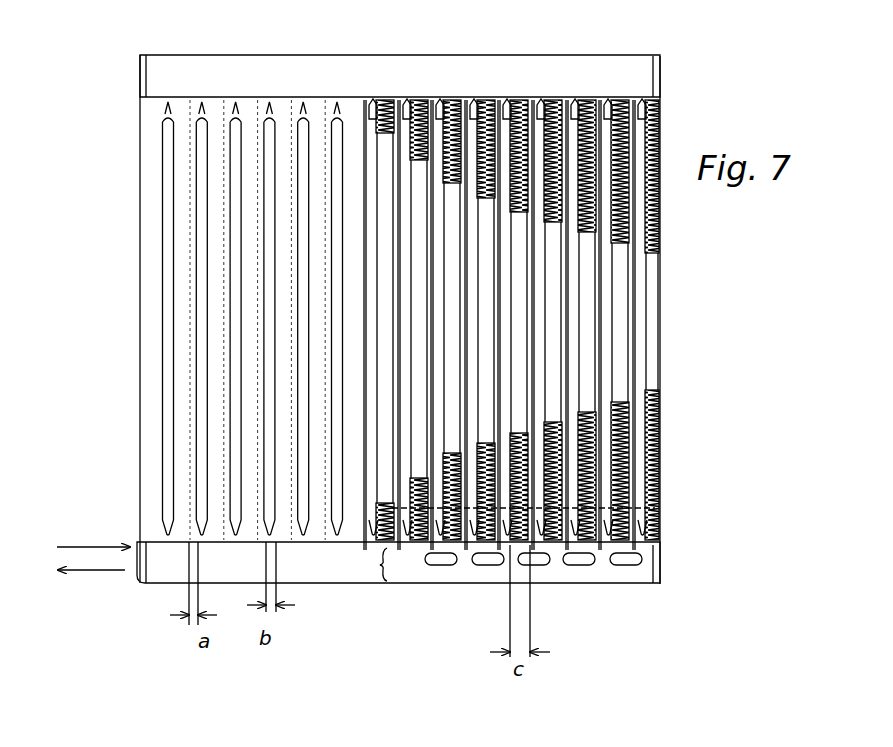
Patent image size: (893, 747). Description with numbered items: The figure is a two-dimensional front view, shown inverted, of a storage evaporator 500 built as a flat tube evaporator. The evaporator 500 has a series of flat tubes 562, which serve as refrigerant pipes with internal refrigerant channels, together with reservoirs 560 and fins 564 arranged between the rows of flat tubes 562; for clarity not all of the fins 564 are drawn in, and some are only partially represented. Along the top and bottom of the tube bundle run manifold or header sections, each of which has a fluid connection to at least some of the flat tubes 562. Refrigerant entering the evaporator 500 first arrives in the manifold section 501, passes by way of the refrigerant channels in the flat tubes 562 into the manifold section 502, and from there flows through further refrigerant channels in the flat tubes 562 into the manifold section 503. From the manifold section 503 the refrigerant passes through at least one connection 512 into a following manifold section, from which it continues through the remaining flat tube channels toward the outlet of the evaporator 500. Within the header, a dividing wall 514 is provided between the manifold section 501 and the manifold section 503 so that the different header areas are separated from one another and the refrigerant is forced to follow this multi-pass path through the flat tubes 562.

The storage evaporator 500 is at (707, 296).
The manifold section 501 is at (176, 566).
The manifold section 502 is at (403, 70).
The manifold section 503 is at (640, 578).
The connection 512 is at (583, 562).
The dividing wall 514 is at (416, 552).
The reservoir 560 is at (641, 367).
The flat tube 562 is at (631, 338).
The fin 564 is at (657, 420).